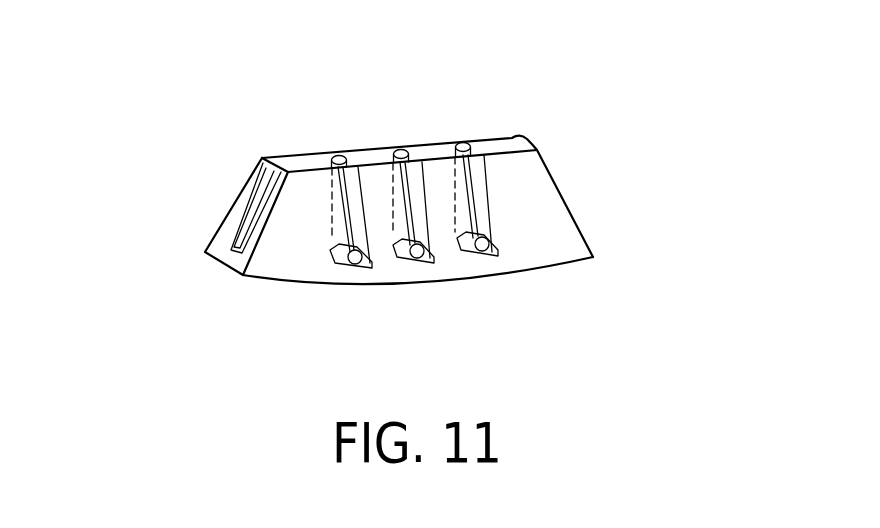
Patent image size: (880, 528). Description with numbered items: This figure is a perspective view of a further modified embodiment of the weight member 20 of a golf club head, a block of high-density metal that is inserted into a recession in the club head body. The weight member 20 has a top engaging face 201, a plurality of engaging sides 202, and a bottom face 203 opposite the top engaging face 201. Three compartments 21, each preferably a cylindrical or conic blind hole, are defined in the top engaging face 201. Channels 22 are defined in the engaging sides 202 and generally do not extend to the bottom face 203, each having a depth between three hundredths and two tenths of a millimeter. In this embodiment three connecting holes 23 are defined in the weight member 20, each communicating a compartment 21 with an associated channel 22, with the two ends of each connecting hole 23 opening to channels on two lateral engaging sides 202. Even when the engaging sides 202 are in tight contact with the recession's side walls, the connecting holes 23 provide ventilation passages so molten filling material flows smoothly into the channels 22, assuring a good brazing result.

The weight member 20 is at (598, 211).
The top engaging face 201 is at (298, 162).
The engaging sides 202 is at (313, 268).
The bottom face 203 is at (220, 265).
The compartment 21 is at (470, 144).
The channel 22 is at (255, 213).
The connecting hole 23 is at (489, 254).